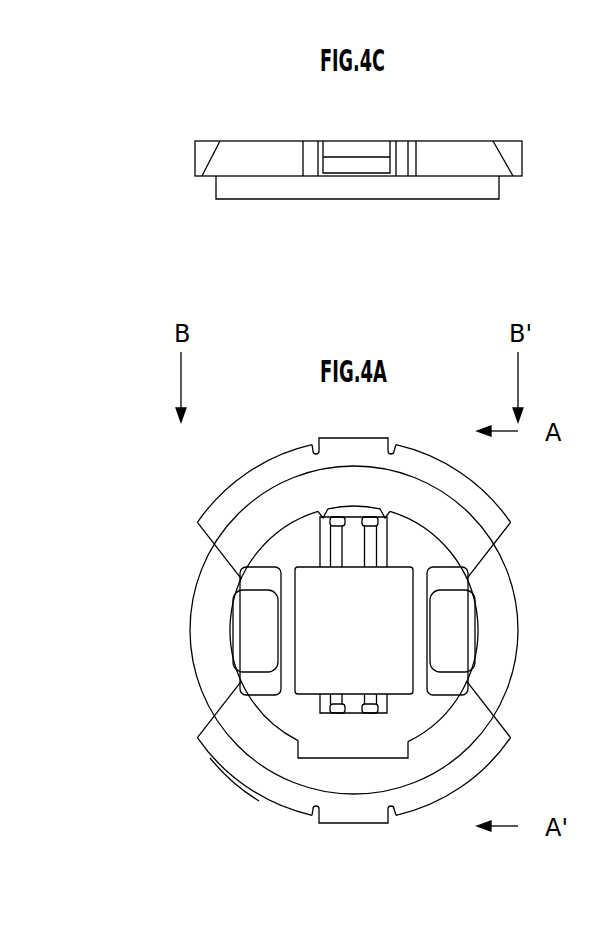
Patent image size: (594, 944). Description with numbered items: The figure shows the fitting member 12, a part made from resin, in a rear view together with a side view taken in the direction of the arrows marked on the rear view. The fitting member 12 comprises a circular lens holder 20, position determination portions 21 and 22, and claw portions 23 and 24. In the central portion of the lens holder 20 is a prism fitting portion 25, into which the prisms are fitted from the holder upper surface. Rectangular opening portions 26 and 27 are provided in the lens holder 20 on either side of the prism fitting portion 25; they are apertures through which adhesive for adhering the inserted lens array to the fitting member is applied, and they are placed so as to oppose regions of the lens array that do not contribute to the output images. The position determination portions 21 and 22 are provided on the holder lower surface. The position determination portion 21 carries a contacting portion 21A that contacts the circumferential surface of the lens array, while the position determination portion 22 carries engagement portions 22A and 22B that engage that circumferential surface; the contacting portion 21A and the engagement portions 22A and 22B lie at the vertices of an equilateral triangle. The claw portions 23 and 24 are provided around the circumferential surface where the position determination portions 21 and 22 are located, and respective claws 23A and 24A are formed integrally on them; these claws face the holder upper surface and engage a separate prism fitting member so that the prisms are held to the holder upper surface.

In FIG. 4A, the fitting member 12 is at (274, 806).
In FIG. 4C, the lens holder 20 is at (204, 152).
In FIG. 4A, the lens holder 20 is at (205, 633).
In FIG. 4C, the position determination portion 21 is at (226, 193).
In FIG. 4A, the position determination portion 21 is at (227, 552).
In FIG. 4A, the contacting portion 21A is at (343, 503).
In FIG. 4A, the position determination portion 22 is at (262, 735).
In FIG. 4A, the engagement portion 22A is at (262, 700).
In FIG. 4A, the engagement portion 22B is at (448, 712).
In FIG. 4C, the claw portion 23 is at (263, 158).
In FIG. 4A, the claw portion 23 is at (223, 513).
In FIG. 4C, the claw 23A is at (356, 165).
In FIG. 4A, the claw 23A is at (350, 446).
In FIG. 4A, the claw portion 24 is at (258, 778).
In FIG. 4A, the claw 24A is at (352, 817).
In FIG. 4A, the prism fitting portion 25 is at (340, 660).
In FIG. 4A, the opening portion 26 is at (250, 610).
In FIG. 4A, the opening portion 27 is at (455, 635).